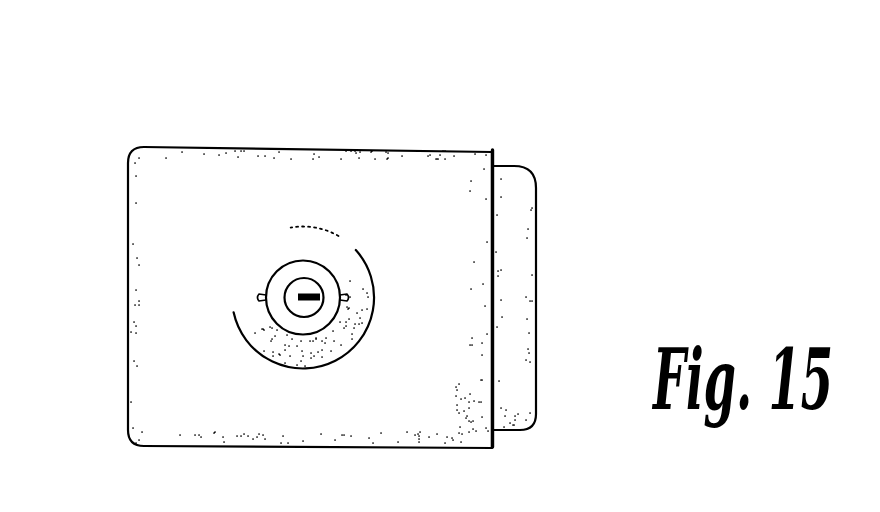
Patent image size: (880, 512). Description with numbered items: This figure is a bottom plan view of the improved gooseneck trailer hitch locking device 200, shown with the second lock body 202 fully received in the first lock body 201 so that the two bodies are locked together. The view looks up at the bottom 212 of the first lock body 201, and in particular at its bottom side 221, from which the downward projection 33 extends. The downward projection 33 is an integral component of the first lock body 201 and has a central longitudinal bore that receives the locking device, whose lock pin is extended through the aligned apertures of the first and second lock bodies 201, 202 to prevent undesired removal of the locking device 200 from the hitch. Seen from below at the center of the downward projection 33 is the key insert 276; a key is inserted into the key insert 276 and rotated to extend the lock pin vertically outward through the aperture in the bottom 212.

The improved gooseneck trailer hitch locking device 200 is at (127, 83).
The first lock body 201 is at (265, 148).
The second lock body 202 is at (538, 205).
The bottom side 221 is at (160, 294).
The bottom 212 is at (127, 367).
The downward projection 33 is at (326, 266).
The key insert 276 is at (301, 292).